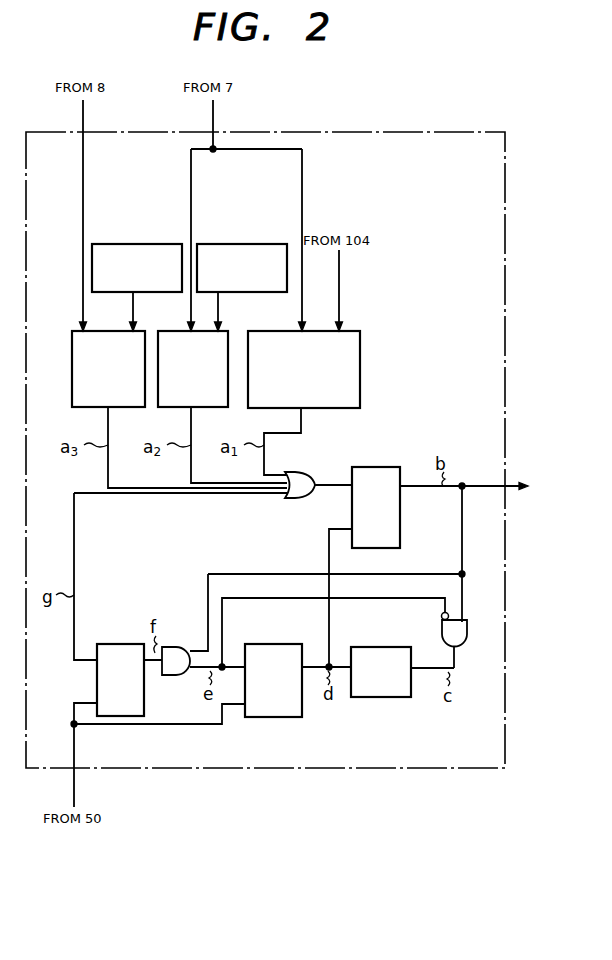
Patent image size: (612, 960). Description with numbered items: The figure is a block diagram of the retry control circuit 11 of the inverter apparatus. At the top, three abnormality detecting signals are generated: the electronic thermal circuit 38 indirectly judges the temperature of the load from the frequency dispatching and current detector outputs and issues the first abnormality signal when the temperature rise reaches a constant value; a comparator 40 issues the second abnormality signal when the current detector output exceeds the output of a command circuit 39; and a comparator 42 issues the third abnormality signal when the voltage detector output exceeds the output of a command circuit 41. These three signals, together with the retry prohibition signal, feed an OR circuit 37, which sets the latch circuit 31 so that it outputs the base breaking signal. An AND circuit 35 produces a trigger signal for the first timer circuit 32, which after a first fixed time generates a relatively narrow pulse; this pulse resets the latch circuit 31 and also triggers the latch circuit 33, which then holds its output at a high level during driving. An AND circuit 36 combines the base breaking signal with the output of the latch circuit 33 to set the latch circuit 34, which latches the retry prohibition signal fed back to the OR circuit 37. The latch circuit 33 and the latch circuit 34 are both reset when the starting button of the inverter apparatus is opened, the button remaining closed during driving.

The retry control circuit 11 is at (485, 132).
The latch circuit of base breaking signal 31 is at (387, 467).
The first timer circuit 32 is at (397, 699).
The latch circuit of the output of the first timer circuit 33 is at (290, 726).
The latch circuit of retry prohibition signal 34 is at (108, 644).
The AND circuit 35 is at (440, 632).
The AND circuit 36 is at (186, 647).
The OR circuit 37 is at (307, 473).
The electronic thermal circuit 38 is at (356, 331).
The command circuit 39 is at (269, 244).
The comparator 40 is at (228, 331).
The command circuit 41 is at (166, 244).
The comparator 42 is at (72, 331).